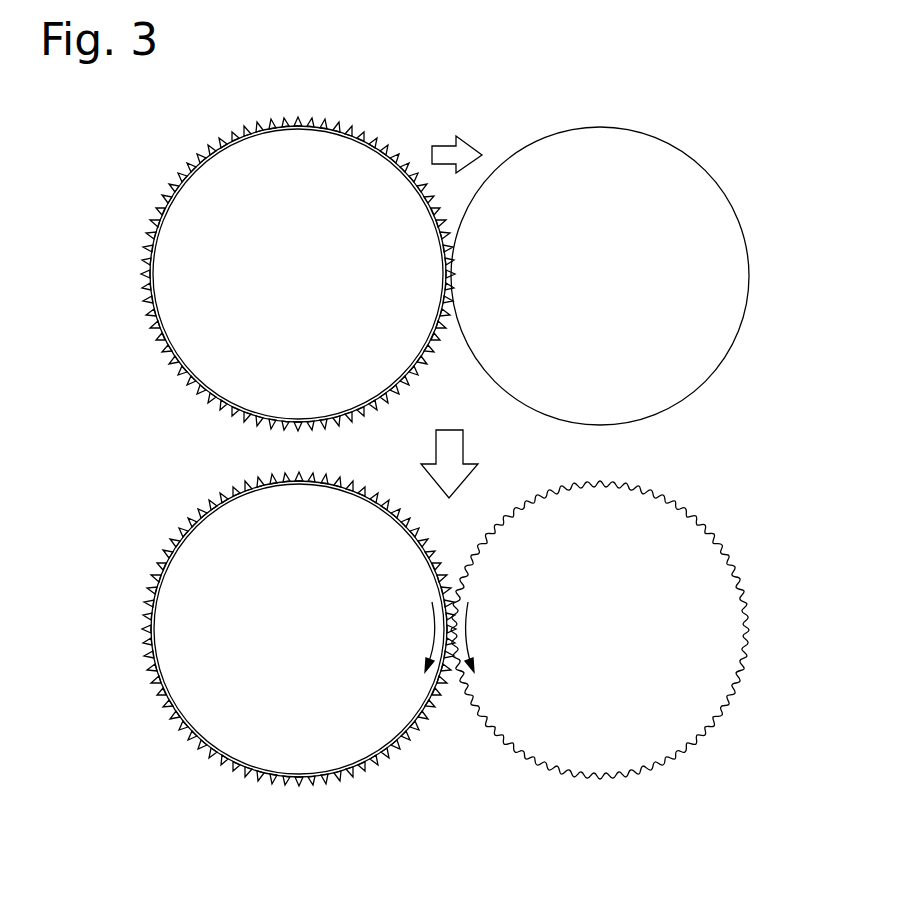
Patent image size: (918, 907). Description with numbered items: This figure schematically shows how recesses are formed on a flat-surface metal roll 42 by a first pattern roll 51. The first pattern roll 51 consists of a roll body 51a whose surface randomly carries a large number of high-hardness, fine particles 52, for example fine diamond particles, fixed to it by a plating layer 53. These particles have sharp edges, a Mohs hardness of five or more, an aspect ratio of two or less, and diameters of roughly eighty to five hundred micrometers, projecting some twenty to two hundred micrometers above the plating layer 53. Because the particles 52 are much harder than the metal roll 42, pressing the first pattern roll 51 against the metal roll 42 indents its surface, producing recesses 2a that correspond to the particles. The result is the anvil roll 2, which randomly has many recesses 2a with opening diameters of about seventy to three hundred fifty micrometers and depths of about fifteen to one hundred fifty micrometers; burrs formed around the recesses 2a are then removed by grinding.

The first pattern roll 51 is at (278, 432).
The roll body 51a is at (271, 274).
The high-hardness, fine particles 52 is at (298, 254).
The plating layer 53 is at (298, 264).
The flat-surface metal roll 42 is at (733, 180).
The anvil roll 2 is at (612, 620).
The recesses 2a is at (600, 620).